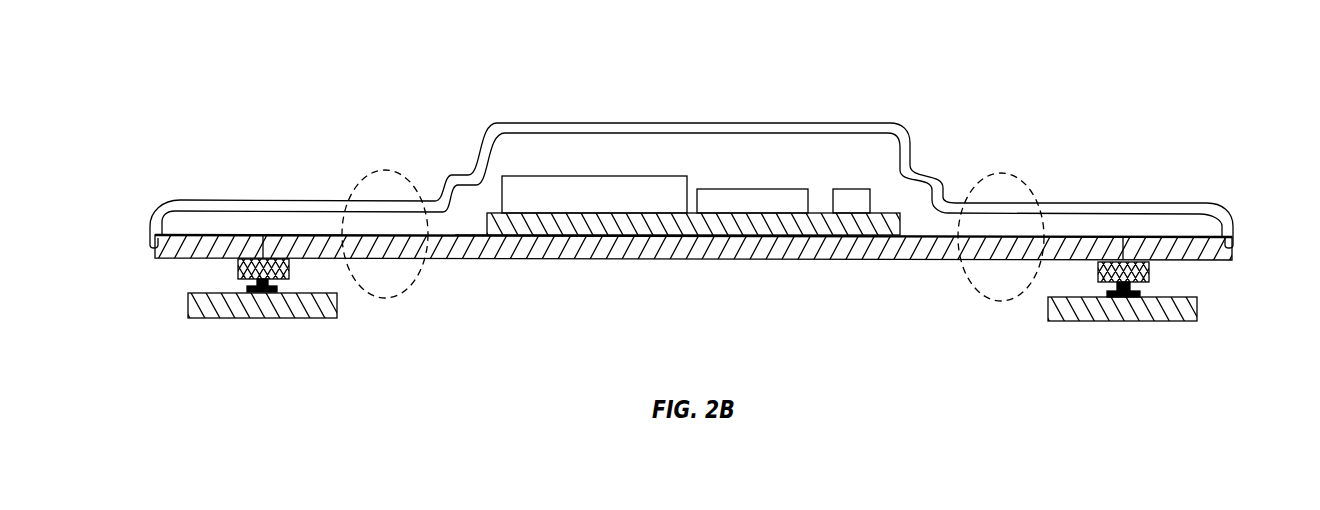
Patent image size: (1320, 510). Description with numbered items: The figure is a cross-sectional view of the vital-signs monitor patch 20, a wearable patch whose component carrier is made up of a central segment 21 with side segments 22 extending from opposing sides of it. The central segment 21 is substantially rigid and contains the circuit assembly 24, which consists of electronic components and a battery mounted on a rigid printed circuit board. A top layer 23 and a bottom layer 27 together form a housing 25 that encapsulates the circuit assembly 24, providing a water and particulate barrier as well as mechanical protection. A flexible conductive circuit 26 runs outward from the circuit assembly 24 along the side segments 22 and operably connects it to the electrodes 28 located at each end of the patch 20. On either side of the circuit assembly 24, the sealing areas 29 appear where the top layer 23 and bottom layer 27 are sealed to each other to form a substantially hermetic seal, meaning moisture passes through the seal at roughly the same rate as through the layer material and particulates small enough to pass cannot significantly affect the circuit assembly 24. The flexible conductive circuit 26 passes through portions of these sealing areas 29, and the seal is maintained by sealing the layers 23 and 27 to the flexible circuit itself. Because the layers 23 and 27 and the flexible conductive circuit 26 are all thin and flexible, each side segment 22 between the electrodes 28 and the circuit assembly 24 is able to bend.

The vital-signs monitor patch 20 is at (700, 196).
The central segment 21 is at (692, 142).
The side segments 22 is at (691, 181).
The top layer 23 is at (695, 131).
The circuit assembly 24 is at (583, 146).
The housing 25 is at (700, 278).
The flexible conductive circuit 26 is at (461, 181).
The bottom layer 27 is at (692, 267).
The electrodes 28 is at (688, 325).
The sealing areas 29 is at (693, 266).